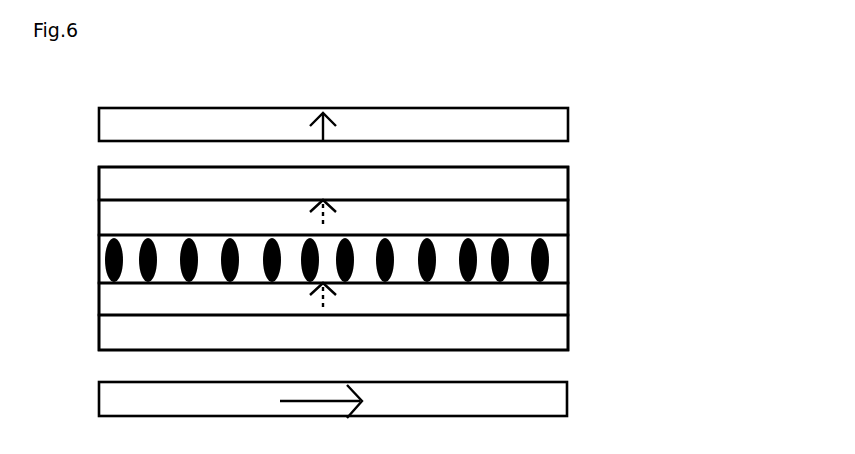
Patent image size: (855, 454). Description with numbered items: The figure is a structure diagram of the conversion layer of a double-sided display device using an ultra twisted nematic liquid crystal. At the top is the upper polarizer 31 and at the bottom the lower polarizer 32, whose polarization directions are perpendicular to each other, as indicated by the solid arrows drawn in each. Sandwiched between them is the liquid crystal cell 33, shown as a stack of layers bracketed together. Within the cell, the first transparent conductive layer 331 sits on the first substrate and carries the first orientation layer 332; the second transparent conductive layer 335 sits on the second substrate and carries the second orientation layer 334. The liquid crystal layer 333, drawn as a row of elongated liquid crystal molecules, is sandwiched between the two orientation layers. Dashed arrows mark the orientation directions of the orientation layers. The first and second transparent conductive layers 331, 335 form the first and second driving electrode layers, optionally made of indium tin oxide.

The upper polarizer 31 is at (558, 128).
The lower polarizer 32 is at (558, 405).
The liquid crystal cell 33 is at (434, 237).
The first transparent conductive layer 331 is at (553, 186).
The first orientation layer 332 is at (555, 215).
The liquid crystal layer 333 is at (560, 260).
The second orientation layer 334 is at (560, 300).
The second transparent conductive layer 335 is at (560, 336).